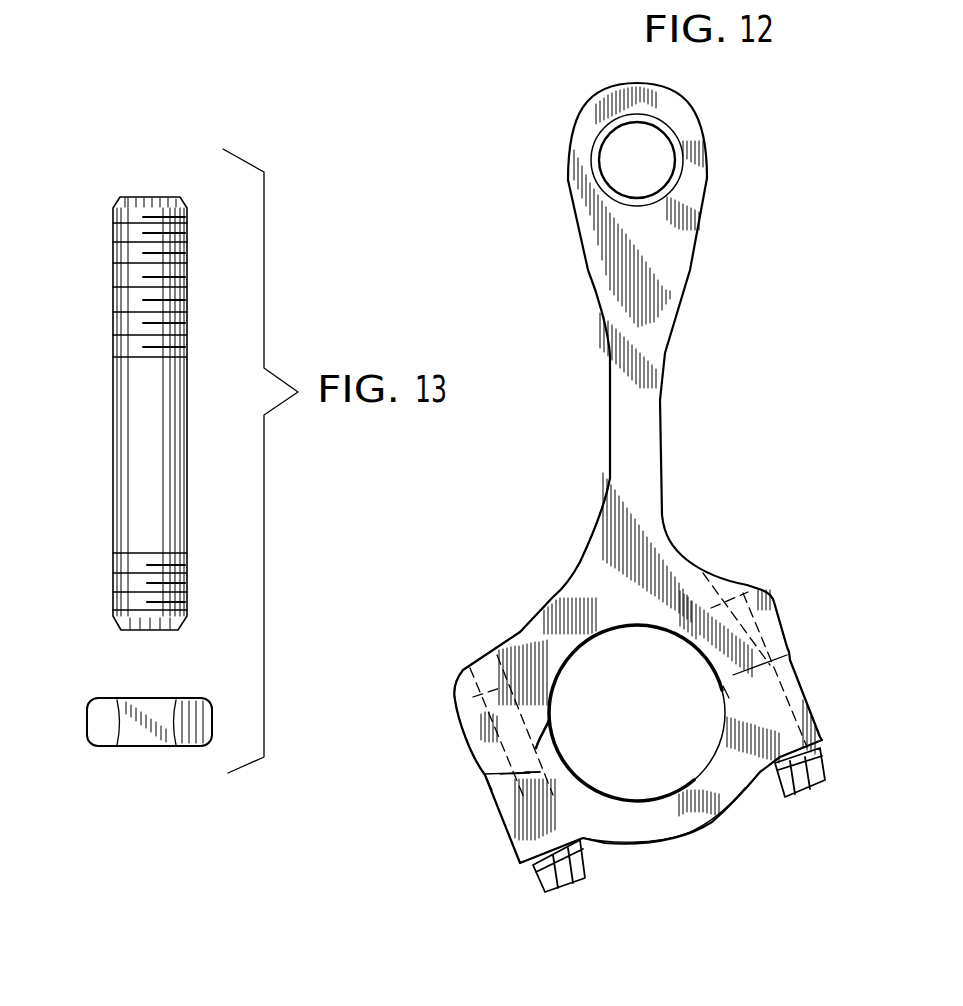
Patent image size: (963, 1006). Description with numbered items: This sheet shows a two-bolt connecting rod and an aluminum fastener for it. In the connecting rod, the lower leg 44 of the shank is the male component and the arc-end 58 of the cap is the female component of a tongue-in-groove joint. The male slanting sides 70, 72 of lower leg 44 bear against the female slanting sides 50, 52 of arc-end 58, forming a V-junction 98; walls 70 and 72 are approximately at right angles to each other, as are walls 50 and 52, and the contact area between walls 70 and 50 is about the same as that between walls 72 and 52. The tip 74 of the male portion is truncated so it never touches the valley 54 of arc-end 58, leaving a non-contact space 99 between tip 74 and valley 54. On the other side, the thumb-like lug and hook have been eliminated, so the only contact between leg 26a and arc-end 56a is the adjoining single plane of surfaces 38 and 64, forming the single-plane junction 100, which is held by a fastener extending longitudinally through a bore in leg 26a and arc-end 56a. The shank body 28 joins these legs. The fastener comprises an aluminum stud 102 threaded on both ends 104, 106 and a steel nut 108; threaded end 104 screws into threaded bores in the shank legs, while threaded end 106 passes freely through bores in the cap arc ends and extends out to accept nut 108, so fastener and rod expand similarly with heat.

In FIG. 12, the leg 26a is at (753, 495).
In FIG. 12, the rod body 28 is at (562, 552).
In FIG. 12, the surface 38 is at (731, 672).
In FIG. 12, the lower leg 44 is at (510, 760).
In FIG. 12, the female slanting side 50 is at (508, 782).
In FIG. 12, the female slanting side 52 is at (550, 882).
In FIG. 12, the valley 54 is at (530, 812).
In FIG. 12, the arc-end 56a is at (826, 710).
In FIG. 12, the arc-end 58 is at (598, 840).
In FIG. 12, the surface 64 is at (729, 689).
In FIG. 12, the male slanting side 70 is at (540, 768).
In FIG. 12, the male slanting side 72 is at (546, 736).
In FIG. 12, the tip 74 is at (518, 762).
In FIG. 12, the V-junction 98 is at (470, 764).
In FIG. 12, the non-contact space 99 is at (510, 795).
In FIG. 12, the single-plane junction 100 is at (803, 640).
In FIG. 13, the aluminum stud 102 is at (138, 398).
In FIG. 13, the threaded end 104 is at (187, 263).
In FIG. 13, the threaded end 106 is at (127, 574).
In FIG. 13, the steel nut 108 is at (97, 723).